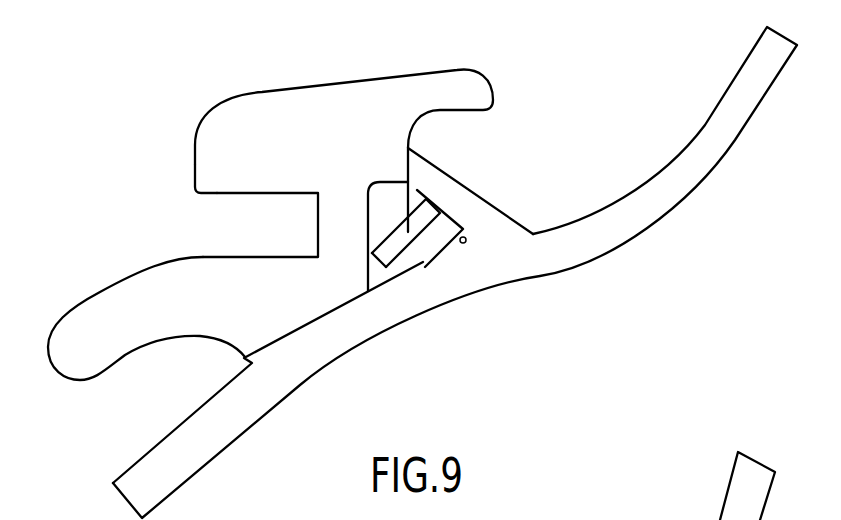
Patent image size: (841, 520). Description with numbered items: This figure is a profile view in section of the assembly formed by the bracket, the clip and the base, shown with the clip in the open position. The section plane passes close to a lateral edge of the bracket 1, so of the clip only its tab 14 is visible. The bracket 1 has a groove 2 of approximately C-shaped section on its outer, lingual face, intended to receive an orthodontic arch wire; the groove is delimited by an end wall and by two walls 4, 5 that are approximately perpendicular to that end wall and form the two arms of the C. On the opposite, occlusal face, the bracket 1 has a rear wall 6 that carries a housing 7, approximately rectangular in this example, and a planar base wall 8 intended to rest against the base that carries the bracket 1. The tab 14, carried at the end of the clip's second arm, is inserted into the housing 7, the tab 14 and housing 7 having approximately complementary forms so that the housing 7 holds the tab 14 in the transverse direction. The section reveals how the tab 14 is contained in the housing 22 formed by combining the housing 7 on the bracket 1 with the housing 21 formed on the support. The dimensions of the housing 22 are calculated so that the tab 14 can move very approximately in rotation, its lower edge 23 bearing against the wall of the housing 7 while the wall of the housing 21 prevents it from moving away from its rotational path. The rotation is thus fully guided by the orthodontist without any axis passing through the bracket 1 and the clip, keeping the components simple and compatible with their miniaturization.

The bracket 1 is at (257, 121).
The groove 2 is at (309, 229).
The wall 4 is at (201, 256).
The wall 5 is at (203, 193).
The rear wall 6 is at (408, 167).
The housing 7 is at (380, 210).
The planar base wall 8 is at (278, 340).
The tab 14 is at (395, 243).
The housing 21 is at (448, 222).
The housing 22 is at (413, 193).
The lower edge 23 is at (370, 257).